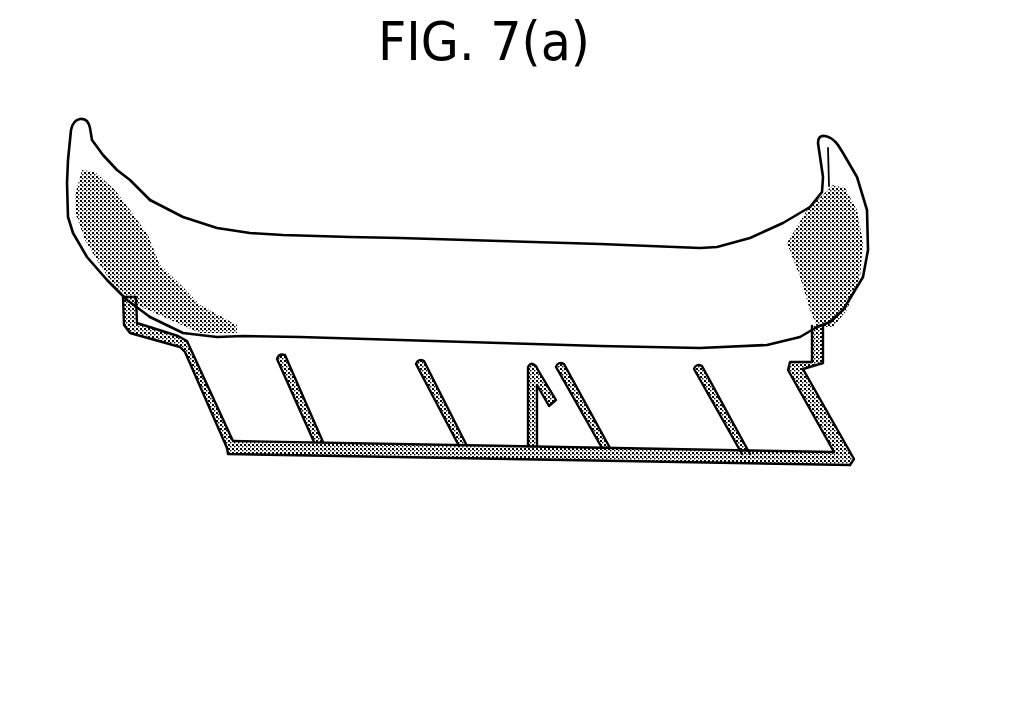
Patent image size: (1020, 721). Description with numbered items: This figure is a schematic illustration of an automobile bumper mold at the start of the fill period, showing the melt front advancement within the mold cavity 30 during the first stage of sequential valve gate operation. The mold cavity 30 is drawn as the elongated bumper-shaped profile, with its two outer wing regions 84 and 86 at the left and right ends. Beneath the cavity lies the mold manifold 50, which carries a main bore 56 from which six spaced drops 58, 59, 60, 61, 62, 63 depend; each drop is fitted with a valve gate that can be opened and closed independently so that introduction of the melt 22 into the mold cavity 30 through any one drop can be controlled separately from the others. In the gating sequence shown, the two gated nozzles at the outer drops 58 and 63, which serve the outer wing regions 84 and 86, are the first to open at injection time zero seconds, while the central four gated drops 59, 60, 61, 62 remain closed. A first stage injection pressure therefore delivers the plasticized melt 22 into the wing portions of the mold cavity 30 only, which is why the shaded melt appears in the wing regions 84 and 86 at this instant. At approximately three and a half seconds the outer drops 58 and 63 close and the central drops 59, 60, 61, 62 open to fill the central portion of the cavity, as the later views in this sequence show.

The mold cavity 30 is at (563, 242).
The outer wing region 84 is at (98, 143).
The outer wing region 86 is at (843, 158).
The melt 22 is at (150, 268).
The mold manifold 50 is at (505, 418).
The manifold drop 63 is at (212, 393).
The manifold drop 62 is at (303, 395).
The manifold drop 61 is at (442, 393).
The manifold drop 60 is at (595, 402).
The manifold drop 59 is at (718, 398).
The manifold drop 58 is at (827, 415).
The main bore 56 is at (727, 463).